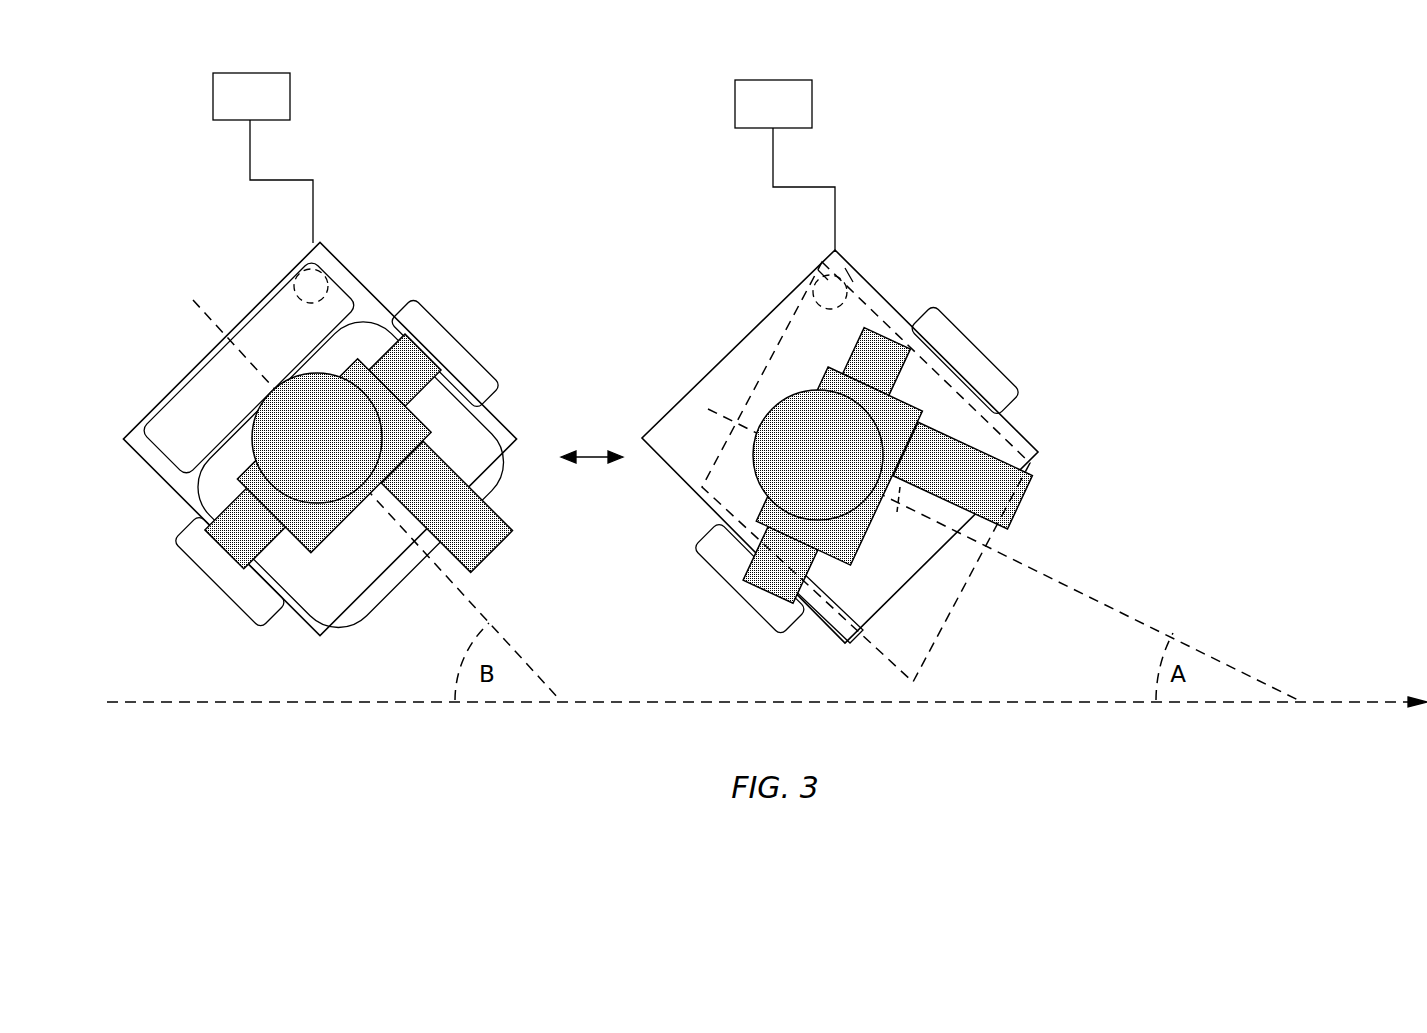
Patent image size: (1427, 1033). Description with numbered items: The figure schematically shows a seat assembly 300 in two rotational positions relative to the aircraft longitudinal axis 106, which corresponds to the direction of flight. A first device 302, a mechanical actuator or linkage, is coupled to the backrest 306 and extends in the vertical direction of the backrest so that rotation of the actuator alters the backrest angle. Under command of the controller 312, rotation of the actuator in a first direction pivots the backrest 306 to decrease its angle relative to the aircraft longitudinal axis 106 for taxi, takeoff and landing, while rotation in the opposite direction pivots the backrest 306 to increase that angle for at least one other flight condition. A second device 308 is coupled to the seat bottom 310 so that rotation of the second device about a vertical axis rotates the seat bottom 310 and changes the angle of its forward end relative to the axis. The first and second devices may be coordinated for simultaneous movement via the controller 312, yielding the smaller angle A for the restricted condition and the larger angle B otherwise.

The aircraft longitudinal axis 106 is at (178, 702).
The seat assembly 300 is at (462, 196).
The first device 302 is at (300, 270).
The backrest 306 is at (332, 267).
The second device 308 is at (903, 503).
The seat bottom 310 is at (500, 428).
The controller 312 is at (270, 110).